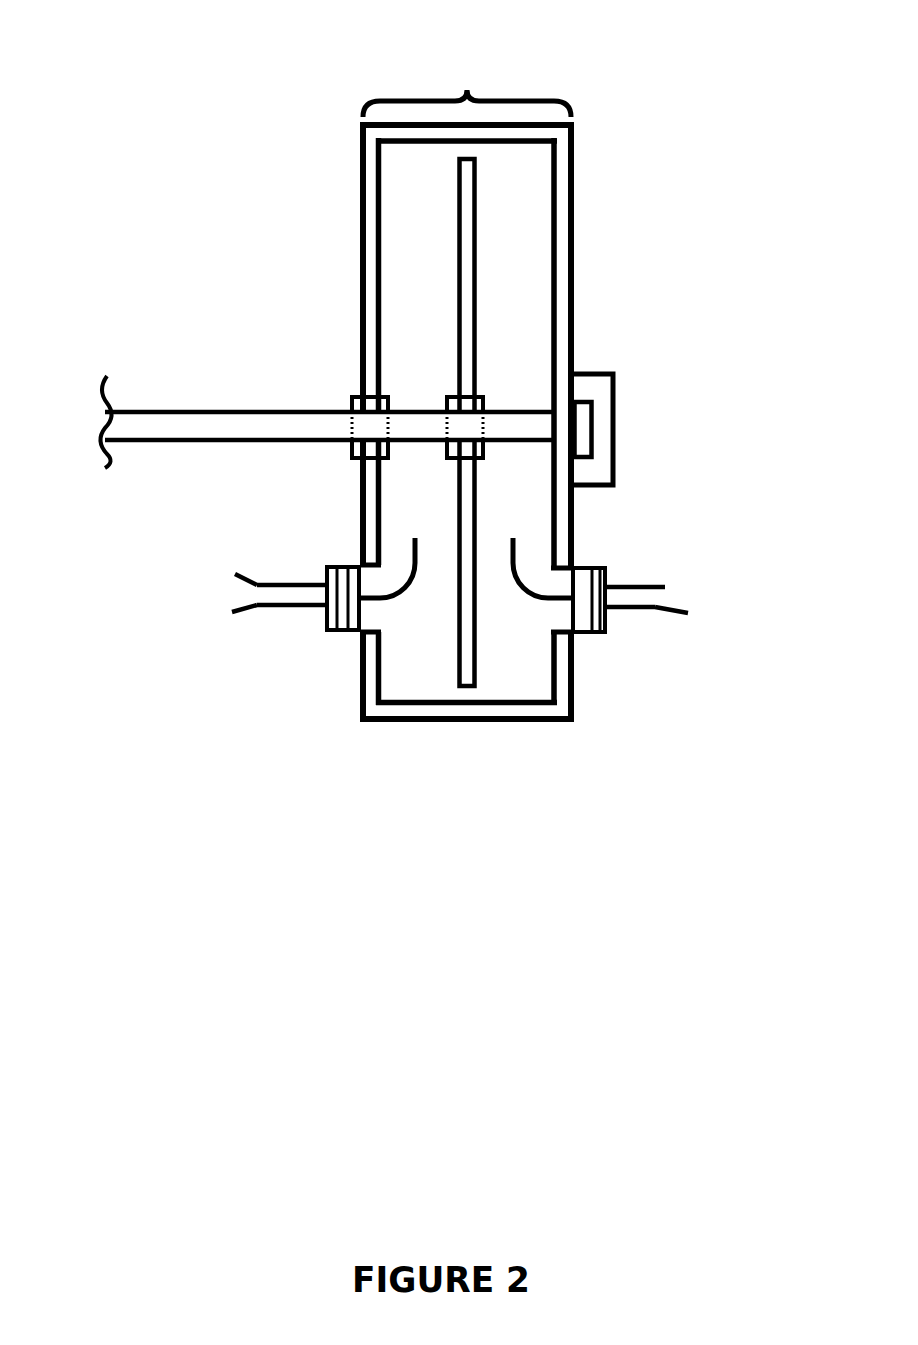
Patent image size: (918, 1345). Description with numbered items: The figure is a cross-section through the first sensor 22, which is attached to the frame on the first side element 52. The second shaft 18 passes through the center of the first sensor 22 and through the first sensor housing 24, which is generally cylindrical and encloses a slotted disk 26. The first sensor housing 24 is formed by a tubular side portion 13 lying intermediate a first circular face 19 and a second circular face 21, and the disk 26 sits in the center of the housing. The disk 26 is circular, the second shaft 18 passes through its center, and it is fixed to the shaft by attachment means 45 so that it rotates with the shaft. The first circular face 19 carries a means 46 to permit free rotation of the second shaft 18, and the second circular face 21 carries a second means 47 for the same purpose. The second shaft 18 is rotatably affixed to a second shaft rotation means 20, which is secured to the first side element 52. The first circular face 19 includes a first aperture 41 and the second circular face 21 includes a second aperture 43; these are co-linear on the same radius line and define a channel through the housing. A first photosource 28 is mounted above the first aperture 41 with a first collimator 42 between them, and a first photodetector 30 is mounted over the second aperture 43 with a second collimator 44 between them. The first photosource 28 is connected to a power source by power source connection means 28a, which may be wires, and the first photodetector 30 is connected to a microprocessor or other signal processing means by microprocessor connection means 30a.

The tubular side portion 13 is at (515, 135).
The second shaft 18 is at (160, 410).
The first circular face 19 is at (360, 250).
The second shaft rotation means 20 is at (577, 400).
The second circular face 21 is at (575, 225).
The first sensor 22 is at (283, 111).
The first sensor housing 24 is at (467, 85).
The slotted disk 26 is at (477, 240).
The first photosource 28 is at (328, 565).
The power source connection means 28a is at (243, 597).
The first photodetector 30 is at (607, 565).
The microprocessor connection means 30a is at (683, 595).
The first aperture 41 is at (396, 549).
The first collimator 42 is at (345, 633).
The second aperture 43 is at (537, 549).
The second collimator 44 is at (580, 632).
The attachment means 45 is at (450, 398).
The means to permit free rotation 46 is at (352, 400).
The second means to permit free rotation 47 is at (552, 408).
The first side element 52 is at (610, 438).